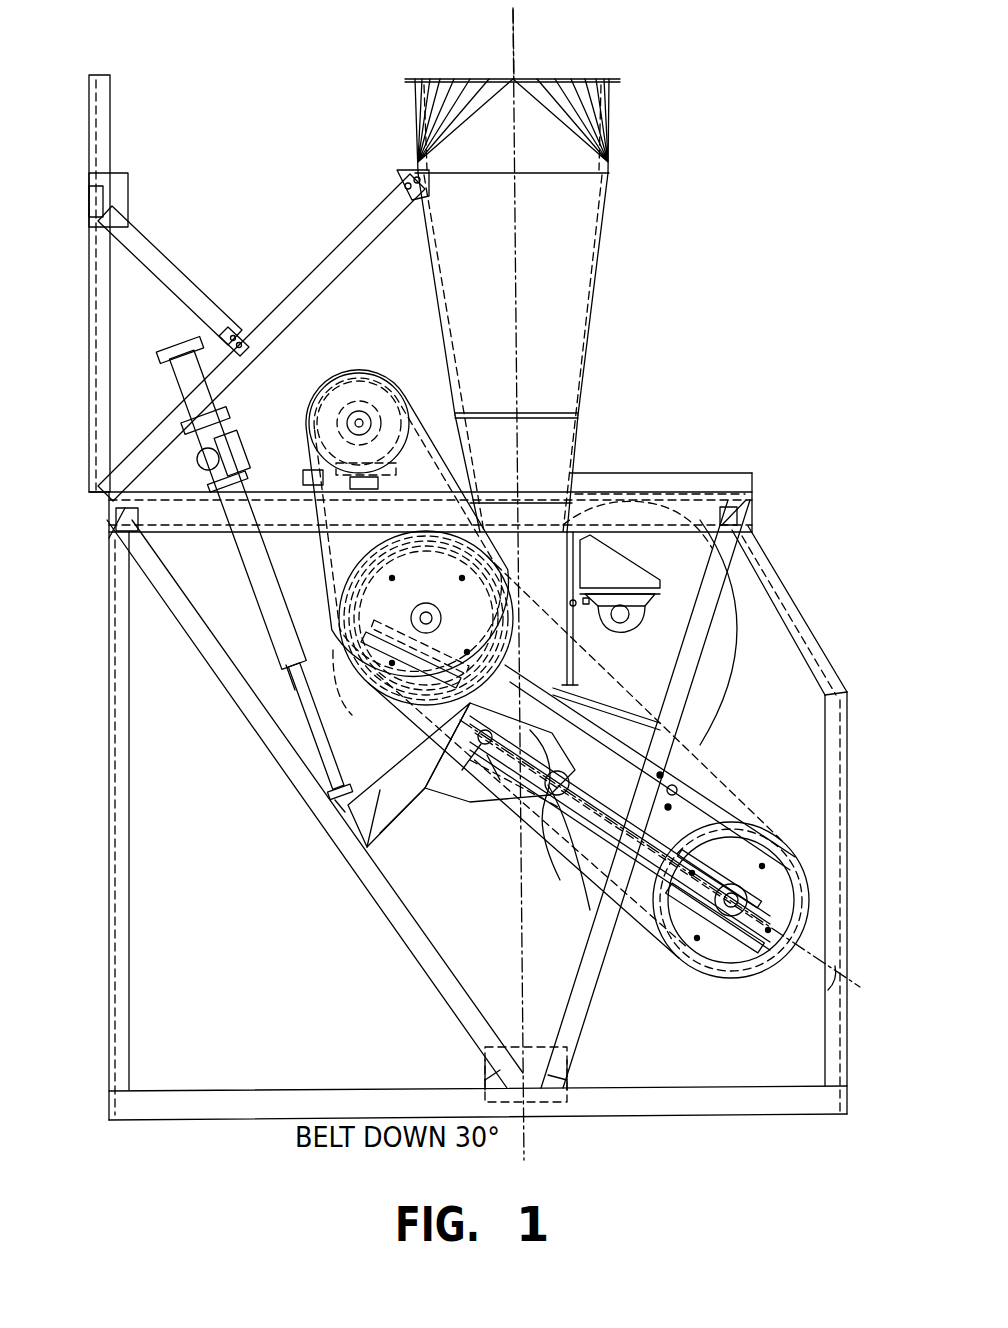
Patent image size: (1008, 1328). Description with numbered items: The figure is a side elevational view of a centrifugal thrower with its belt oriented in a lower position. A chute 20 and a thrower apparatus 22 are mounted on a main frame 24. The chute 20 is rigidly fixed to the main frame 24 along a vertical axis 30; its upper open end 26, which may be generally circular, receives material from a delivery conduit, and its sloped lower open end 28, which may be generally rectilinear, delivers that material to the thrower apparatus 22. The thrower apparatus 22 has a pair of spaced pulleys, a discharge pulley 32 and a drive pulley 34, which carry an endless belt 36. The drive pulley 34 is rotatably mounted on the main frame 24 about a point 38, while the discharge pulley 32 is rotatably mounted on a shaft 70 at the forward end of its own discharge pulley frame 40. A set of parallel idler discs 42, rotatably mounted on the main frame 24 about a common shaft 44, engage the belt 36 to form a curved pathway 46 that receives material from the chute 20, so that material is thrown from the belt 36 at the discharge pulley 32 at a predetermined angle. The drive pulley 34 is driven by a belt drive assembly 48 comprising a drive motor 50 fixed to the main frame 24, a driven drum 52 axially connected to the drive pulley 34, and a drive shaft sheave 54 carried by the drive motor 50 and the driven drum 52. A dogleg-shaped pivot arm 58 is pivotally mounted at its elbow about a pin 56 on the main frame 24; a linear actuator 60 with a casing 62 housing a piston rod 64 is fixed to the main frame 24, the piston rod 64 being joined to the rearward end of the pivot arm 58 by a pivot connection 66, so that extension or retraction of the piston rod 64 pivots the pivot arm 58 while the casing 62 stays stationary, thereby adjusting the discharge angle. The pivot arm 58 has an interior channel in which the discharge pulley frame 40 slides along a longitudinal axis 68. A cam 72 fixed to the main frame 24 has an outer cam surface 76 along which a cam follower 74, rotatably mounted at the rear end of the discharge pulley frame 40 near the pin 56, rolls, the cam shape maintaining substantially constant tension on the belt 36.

The chute 20 is at (568, 318).
The thrower apparatus 22 is at (730, 805).
The main frame 24 is at (125, 912).
The upper open end 26 is at (605, 76).
The lower open end 28 is at (585, 698).
The vertical axis 30 is at (516, 60).
The discharge pulley 32 is at (745, 853).
The drive pulley 34 is at (385, 588).
The endless belt 36 is at (700, 732).
The point 38 is at (425, 603).
The discharge pulley frame 40 is at (672, 790).
The idler discs 42 is at (718, 678).
The common shaft 44 is at (628, 617).
The curved pathway 46 is at (575, 660).
The belt drive assembly 48 is at (340, 372).
The drive motor 50 is at (372, 392).
The driven drum 52 is at (336, 696).
The drive shaft sheave 54 is at (310, 444).
The pin 56 is at (453, 792).
The pivot arm 58 is at (428, 798).
The linear actuator 60 is at (299, 718).
The casing 62 is at (286, 630).
The piston rod 64 is at (325, 772).
The pivot connection 66 is at (345, 812).
The longitudinal axis 68 is at (810, 1000).
The shaft 70 is at (738, 905).
The cam 72 is at (500, 803).
The cam follower 74 is at (592, 912).
The outer cam surface 76 is at (530, 822).